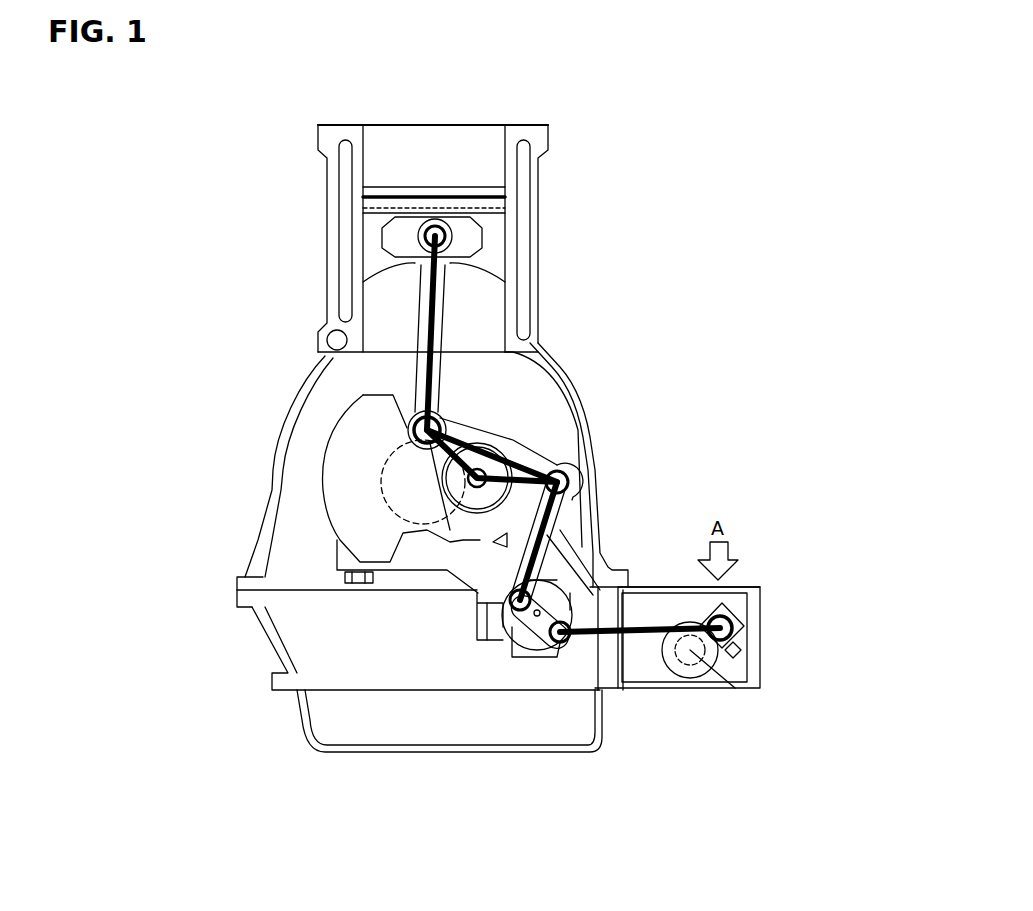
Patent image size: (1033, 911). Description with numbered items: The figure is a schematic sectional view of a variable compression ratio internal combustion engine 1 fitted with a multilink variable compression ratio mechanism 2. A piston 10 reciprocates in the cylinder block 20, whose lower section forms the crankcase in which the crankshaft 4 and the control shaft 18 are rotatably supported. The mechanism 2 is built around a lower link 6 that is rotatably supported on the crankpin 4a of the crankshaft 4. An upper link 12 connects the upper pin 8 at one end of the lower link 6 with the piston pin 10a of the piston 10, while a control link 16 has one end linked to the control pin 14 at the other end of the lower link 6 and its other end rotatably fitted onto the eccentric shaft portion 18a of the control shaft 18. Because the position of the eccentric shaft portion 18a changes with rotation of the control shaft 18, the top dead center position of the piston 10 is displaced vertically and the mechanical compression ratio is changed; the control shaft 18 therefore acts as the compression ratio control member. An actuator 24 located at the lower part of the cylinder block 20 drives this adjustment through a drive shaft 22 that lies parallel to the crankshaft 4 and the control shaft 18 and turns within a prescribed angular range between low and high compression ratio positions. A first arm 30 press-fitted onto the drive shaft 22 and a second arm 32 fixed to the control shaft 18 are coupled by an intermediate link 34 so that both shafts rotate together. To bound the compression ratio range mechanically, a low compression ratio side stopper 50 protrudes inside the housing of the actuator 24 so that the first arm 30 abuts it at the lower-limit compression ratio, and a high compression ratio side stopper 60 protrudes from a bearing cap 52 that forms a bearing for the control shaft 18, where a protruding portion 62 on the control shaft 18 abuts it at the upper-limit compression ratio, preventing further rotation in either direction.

The variable compression ratio internal combustion engine 1 is at (593, 150).
The variable compression ratio mechanism 2 is at (392, 390).
The crankshaft 4 is at (345, 455).
The crankpin 4a is at (437, 482).
The lower link 6 is at (507, 437).
The upper pin 8 is at (410, 437).
The piston 10 is at (370, 240).
The piston pin 10a is at (448, 232).
The upper link 12 is at (417, 317).
The control pin 14 is at (558, 472).
The control link 16 is at (557, 527).
The control shaft 18 is at (562, 608).
The eccentric shaft portion 18a is at (513, 628).
The cylinder block 20 is at (580, 407).
The drive shaft 22 is at (763, 692).
The actuator 24 is at (753, 602).
The first arm 30 is at (735, 626).
The second arm 32 is at (542, 628).
The intermediate link 34 is at (647, 633).
The low compression ratio side stopper 50 is at (740, 650).
The bearing cap 52 is at (315, 576).
The high compression ratio side stopper 60 is at (475, 592).
The protruding portion 62 is at (490, 618).